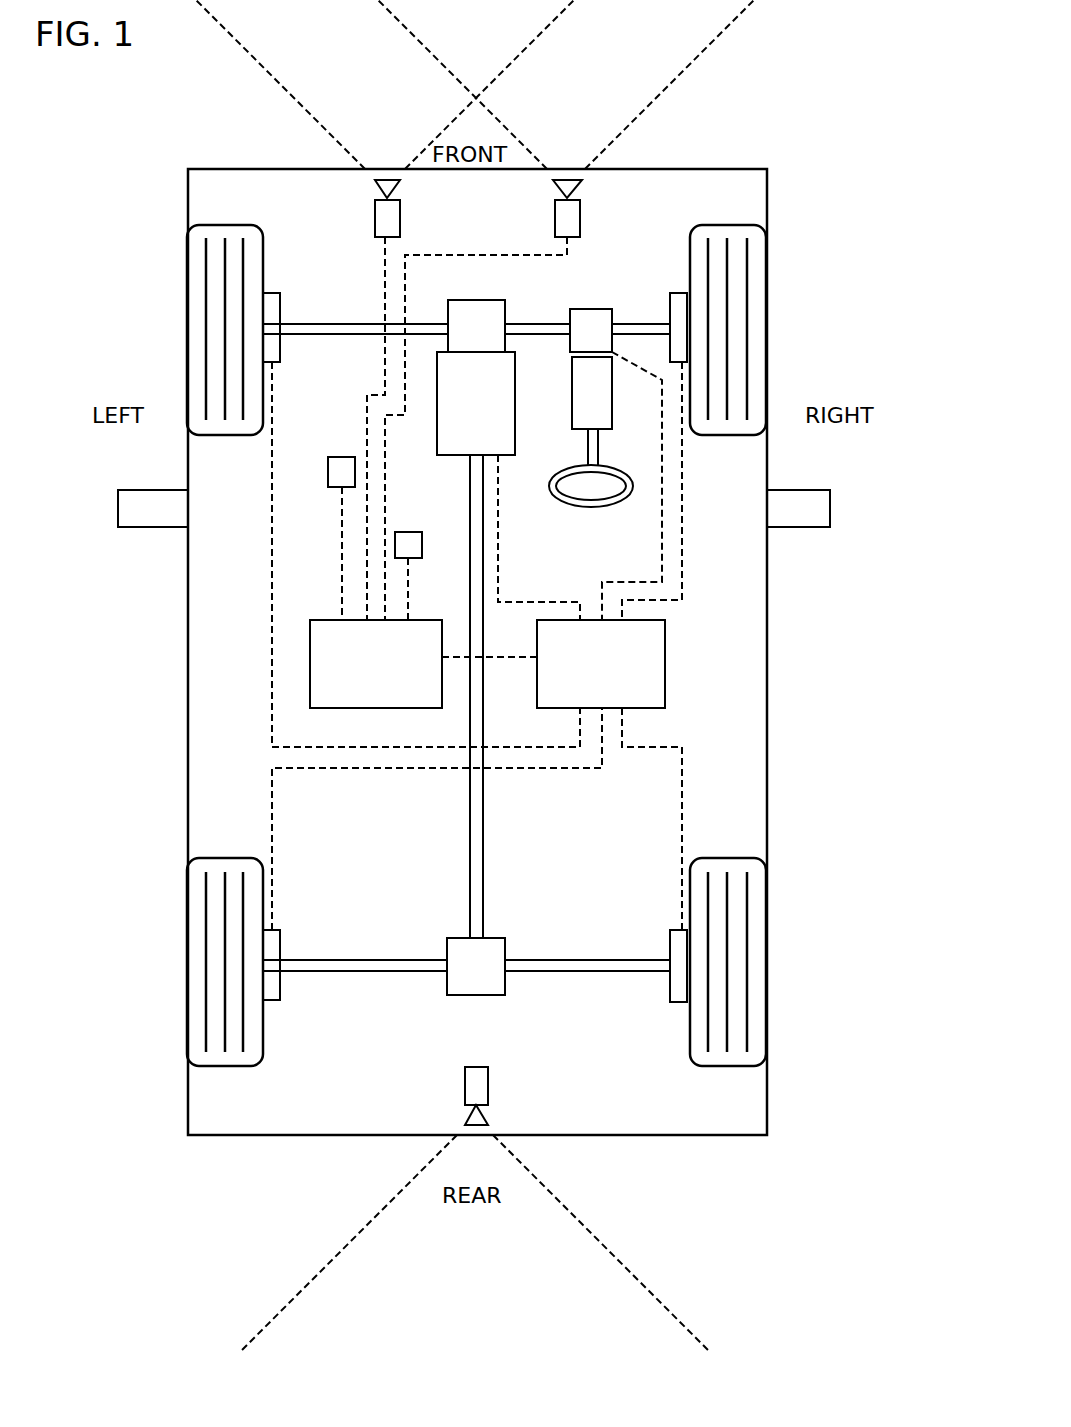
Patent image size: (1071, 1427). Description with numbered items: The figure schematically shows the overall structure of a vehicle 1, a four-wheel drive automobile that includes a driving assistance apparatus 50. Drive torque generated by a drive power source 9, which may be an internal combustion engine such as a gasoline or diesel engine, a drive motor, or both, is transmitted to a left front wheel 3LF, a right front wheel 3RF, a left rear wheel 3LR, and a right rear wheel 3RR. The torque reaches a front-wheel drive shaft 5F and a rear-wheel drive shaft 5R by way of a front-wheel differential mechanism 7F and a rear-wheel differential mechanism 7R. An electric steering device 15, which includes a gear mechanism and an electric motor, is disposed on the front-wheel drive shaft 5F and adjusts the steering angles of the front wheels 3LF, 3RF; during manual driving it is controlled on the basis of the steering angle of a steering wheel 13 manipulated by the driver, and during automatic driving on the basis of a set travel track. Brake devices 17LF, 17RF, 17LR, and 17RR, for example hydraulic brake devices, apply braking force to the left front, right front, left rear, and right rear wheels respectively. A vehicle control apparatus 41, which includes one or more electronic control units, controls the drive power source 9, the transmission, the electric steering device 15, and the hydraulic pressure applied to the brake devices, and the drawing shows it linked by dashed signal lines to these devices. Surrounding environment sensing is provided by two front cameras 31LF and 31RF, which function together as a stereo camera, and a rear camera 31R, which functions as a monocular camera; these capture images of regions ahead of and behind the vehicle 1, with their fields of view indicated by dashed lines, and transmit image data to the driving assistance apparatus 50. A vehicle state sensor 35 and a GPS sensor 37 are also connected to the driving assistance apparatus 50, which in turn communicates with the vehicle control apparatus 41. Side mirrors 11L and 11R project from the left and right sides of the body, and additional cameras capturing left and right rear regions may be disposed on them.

The vehicle 1 is at (773, 160).
The left front wheel 3LF is at (187, 292).
The right front wheel 3RF is at (758, 290).
The left rear wheel 3LR is at (187, 988).
The right rear wheel 3RR is at (758, 983).
The front-wheel drive shaft 5F is at (306, 336).
The rear-wheel drive shaft 5R is at (360, 975).
The front-wheel differential mechanism 7F is at (505, 306).
The rear-wheel differential mechanism 7R is at (481, 995).
The drive power source 9 is at (515, 378).
The side mirror 11L is at (133, 492).
The side mirror 11R is at (830, 493).
The steering wheel 13 is at (622, 468).
The electric steering device 15 is at (592, 309).
The brake device 17LF is at (282, 303).
The brake device 17RF is at (670, 303).
The brake device 17LR is at (280, 1000).
The brake device 17RR is at (670, 1000).
The front camera 31LF is at (375, 215).
The front camera 31RF is at (580, 215).
The rear camera 31R is at (465, 1088).
The vehicle state sensor 35 is at (422, 545).
The GPS sensor 37 is at (338, 457).
The vehicle control apparatus 41 is at (665, 657).
The driving assistance apparatus 50 is at (385, 708).